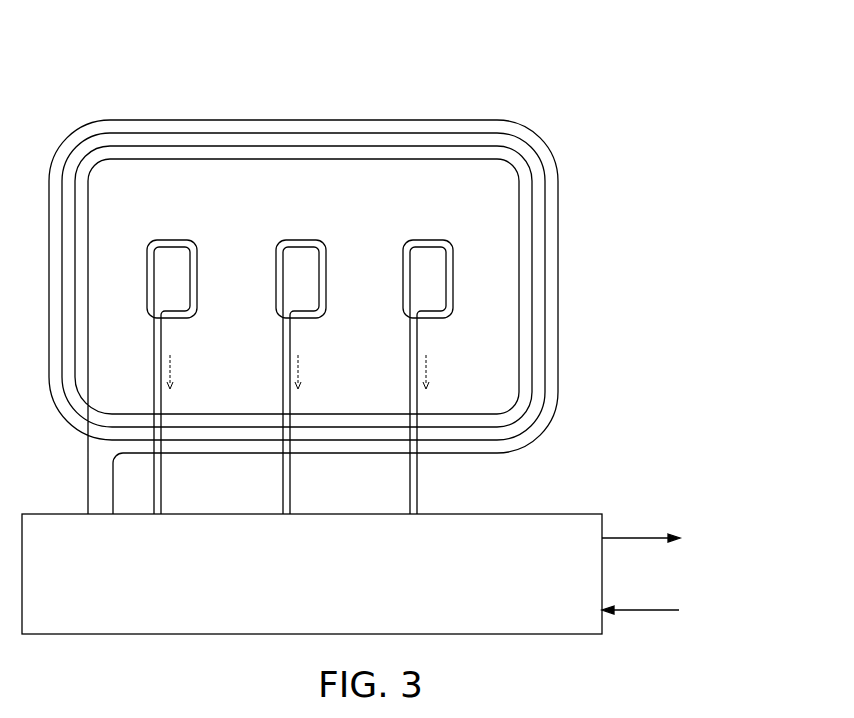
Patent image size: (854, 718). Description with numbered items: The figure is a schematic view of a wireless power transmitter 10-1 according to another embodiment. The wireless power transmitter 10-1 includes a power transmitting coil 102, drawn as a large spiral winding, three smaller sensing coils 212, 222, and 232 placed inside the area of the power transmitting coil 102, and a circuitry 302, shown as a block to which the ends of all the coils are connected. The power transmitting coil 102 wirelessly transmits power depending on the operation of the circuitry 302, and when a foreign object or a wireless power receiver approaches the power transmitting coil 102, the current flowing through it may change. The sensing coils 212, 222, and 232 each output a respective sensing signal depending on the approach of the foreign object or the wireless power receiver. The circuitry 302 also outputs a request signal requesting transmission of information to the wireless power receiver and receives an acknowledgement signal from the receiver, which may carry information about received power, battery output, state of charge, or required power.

The wireless power transmitter 10-1 is at (378, 31).
The power transmitting coil 102 is at (452, 118).
The sensing coil 212 is at (197, 258).
The sensing coil 222 is at (326, 258).
The sensing coil 232 is at (454, 258).
The circuitry 302 is at (542, 512).